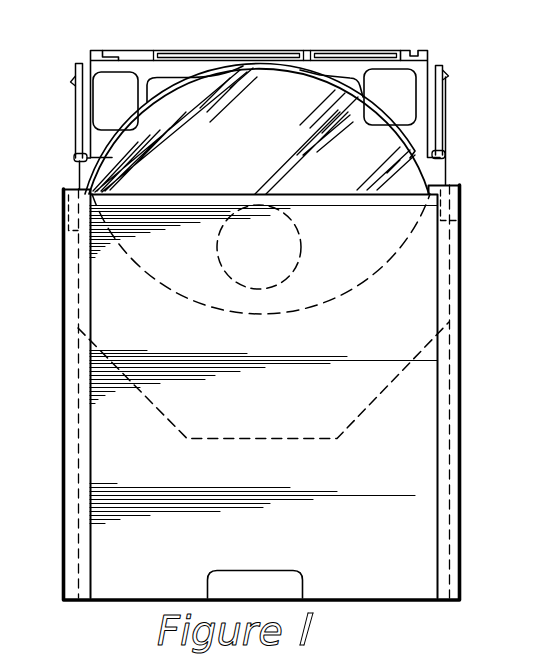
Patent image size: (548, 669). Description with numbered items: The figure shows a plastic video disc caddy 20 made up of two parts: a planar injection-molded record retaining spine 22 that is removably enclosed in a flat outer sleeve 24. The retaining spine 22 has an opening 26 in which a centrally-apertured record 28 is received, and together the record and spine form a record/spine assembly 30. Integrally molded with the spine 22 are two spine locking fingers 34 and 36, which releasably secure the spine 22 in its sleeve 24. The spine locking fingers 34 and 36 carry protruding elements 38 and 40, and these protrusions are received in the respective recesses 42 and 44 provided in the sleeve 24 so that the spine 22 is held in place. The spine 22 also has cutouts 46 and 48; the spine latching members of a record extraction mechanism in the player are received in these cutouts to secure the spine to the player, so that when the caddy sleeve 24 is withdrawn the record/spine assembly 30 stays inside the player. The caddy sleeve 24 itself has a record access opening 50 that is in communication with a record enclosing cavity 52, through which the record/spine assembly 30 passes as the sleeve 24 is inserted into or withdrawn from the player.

The plastic video disc caddy 20 is at (297, 372).
The record retaining spine 22 is at (269, 87).
The outer sleeve 24 is at (432, 446).
The opening 26 is at (400, 143).
The centrally-apertured record 28 is at (78, 158).
The record/spine assembly 30 is at (479, 98).
The spine locking finger 34 is at (56, 127).
The spine locking finger 36 is at (463, 126).
The protruding element 38 is at (72, 82).
The protruding element 40 is at (458, 63).
The recess 42 is at (73, 218).
The recess 44 is at (452, 222).
The cutout 46 is at (112, 53).
The cutout 48 is at (409, 53).
The record access opening 50 is at (209, 194).
The record enclosing cavity 52 is at (92, 466).